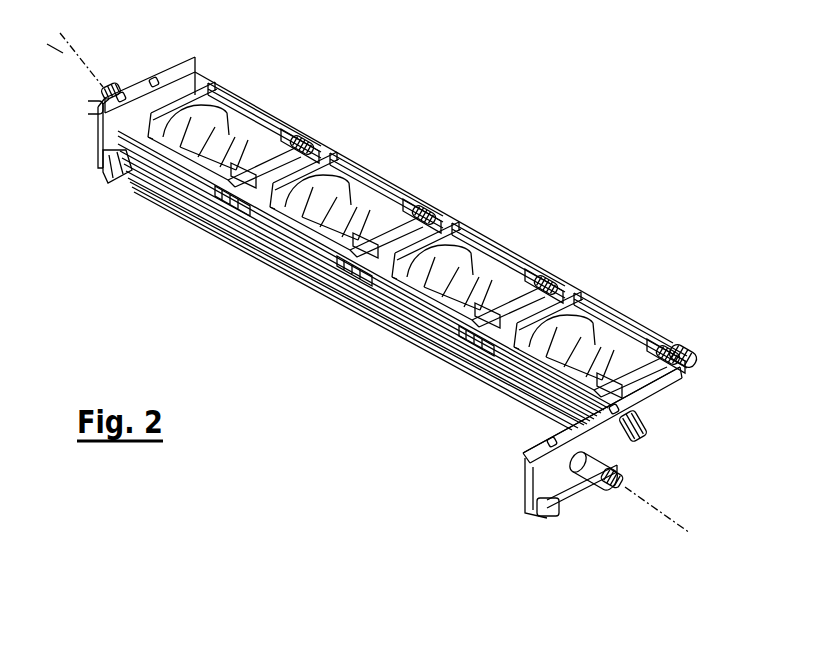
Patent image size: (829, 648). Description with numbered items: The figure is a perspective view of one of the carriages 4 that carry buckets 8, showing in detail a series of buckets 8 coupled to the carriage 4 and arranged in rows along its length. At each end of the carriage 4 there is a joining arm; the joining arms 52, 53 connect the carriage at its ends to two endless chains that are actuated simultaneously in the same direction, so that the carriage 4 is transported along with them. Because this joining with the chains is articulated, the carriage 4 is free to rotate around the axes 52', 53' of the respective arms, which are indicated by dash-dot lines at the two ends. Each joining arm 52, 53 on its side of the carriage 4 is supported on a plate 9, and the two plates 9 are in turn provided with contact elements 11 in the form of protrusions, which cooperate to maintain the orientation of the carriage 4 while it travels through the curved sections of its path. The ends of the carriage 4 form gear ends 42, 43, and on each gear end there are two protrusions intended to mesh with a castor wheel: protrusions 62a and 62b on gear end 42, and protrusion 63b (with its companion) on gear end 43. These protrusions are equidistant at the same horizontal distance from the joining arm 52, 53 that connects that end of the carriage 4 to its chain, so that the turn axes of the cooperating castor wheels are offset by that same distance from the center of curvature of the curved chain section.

The carriage 4 is at (497, 387).
The bucket 8 is at (207, 113).
The plate 9 is at (163, 72).
The contact element 11 is at (92, 117).
The gear end 42 is at (553, 427).
The gear end 43 is at (108, 163).
The joining arm 52 is at (595, 500).
The axis 52' is at (657, 533).
The joining arm 53 is at (84, 82).
The axis 53' is at (75, 47).
The protrusion 62a is at (638, 424).
The protrusion 62b is at (548, 516).
The protrusion 63b is at (88, 107).